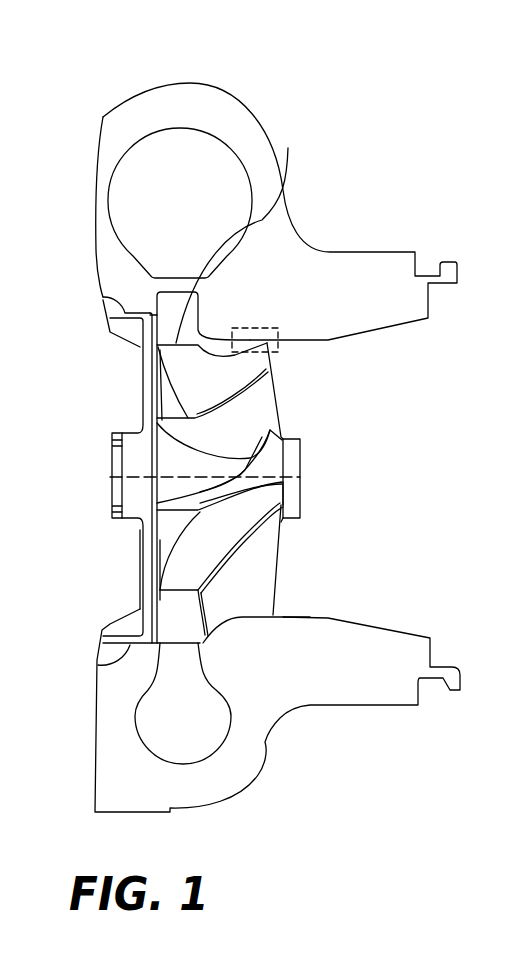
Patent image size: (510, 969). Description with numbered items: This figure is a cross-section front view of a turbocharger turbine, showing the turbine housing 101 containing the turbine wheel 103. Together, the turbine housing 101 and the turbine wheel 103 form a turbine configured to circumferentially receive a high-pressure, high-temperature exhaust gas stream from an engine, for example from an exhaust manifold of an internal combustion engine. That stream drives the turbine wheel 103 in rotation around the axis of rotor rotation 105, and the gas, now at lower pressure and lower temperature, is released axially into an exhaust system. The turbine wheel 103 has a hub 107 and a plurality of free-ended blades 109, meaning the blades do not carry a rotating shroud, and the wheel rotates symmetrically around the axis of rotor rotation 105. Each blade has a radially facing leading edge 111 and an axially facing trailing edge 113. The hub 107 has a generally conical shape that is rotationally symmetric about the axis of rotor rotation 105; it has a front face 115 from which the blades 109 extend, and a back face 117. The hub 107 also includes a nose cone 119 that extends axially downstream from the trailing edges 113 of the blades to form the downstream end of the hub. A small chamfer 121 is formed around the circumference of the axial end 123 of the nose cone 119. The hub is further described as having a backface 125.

The turbine housing 101 is at (277, 430).
The turbine wheel 103 is at (97, 478).
The axis of rotor rotation 105 is at (175, 496).
The hub 107 is at (162, 479).
The free-ended blades 109 is at (265, 569).
The leading edge 111 is at (270, 245).
The trailing edge 113 is at (286, 471).
The front face 115 is at (121, 382).
The back face 117 is at (111, 570).
The nose cone 119 is at (330, 495).
The chamfer 121 is at (314, 534).
The axial end 123 is at (323, 478).
The backface 125 is at (97, 385).